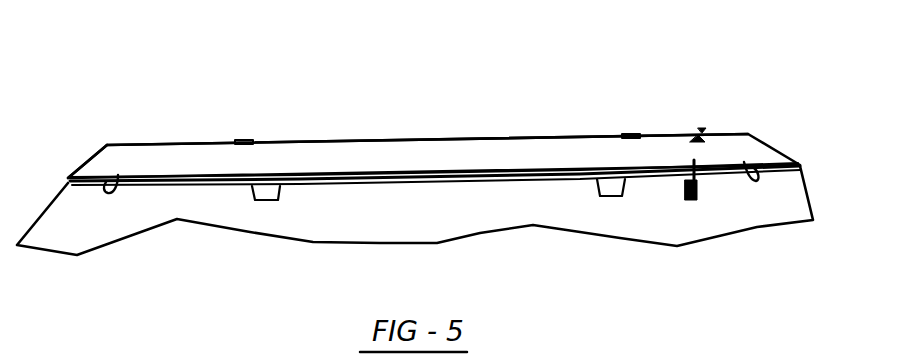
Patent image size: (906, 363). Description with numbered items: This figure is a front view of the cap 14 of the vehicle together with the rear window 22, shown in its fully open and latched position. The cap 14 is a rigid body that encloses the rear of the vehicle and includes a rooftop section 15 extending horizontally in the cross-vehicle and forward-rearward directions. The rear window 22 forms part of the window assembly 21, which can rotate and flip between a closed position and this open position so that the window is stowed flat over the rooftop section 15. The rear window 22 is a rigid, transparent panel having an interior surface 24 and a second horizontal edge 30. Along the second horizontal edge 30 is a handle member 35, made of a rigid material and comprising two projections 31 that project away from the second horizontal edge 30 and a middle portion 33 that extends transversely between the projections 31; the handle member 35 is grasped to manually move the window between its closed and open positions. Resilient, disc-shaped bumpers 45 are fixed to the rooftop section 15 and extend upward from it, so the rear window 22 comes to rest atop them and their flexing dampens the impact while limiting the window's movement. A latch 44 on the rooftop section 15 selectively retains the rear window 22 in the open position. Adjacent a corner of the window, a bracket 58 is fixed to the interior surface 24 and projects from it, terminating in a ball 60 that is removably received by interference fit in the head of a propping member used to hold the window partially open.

The cap 14 is at (753, 207).
The rooftop section 15 is at (415, 229).
The window assembly 21 is at (502, 155).
The rear window 22 is at (178, 162).
The interior surface 24 is at (338, 150).
The second horizontal edge 30 is at (335, 187).
The projections 31 is at (110, 178).
The middle portion 33 is at (490, 187).
The handle member 35 is at (557, 187).
The latch 44 is at (682, 190).
The bumpers 45 is at (267, 200).
The bracket 58 is at (699, 132).
The ball 60 is at (704, 130).